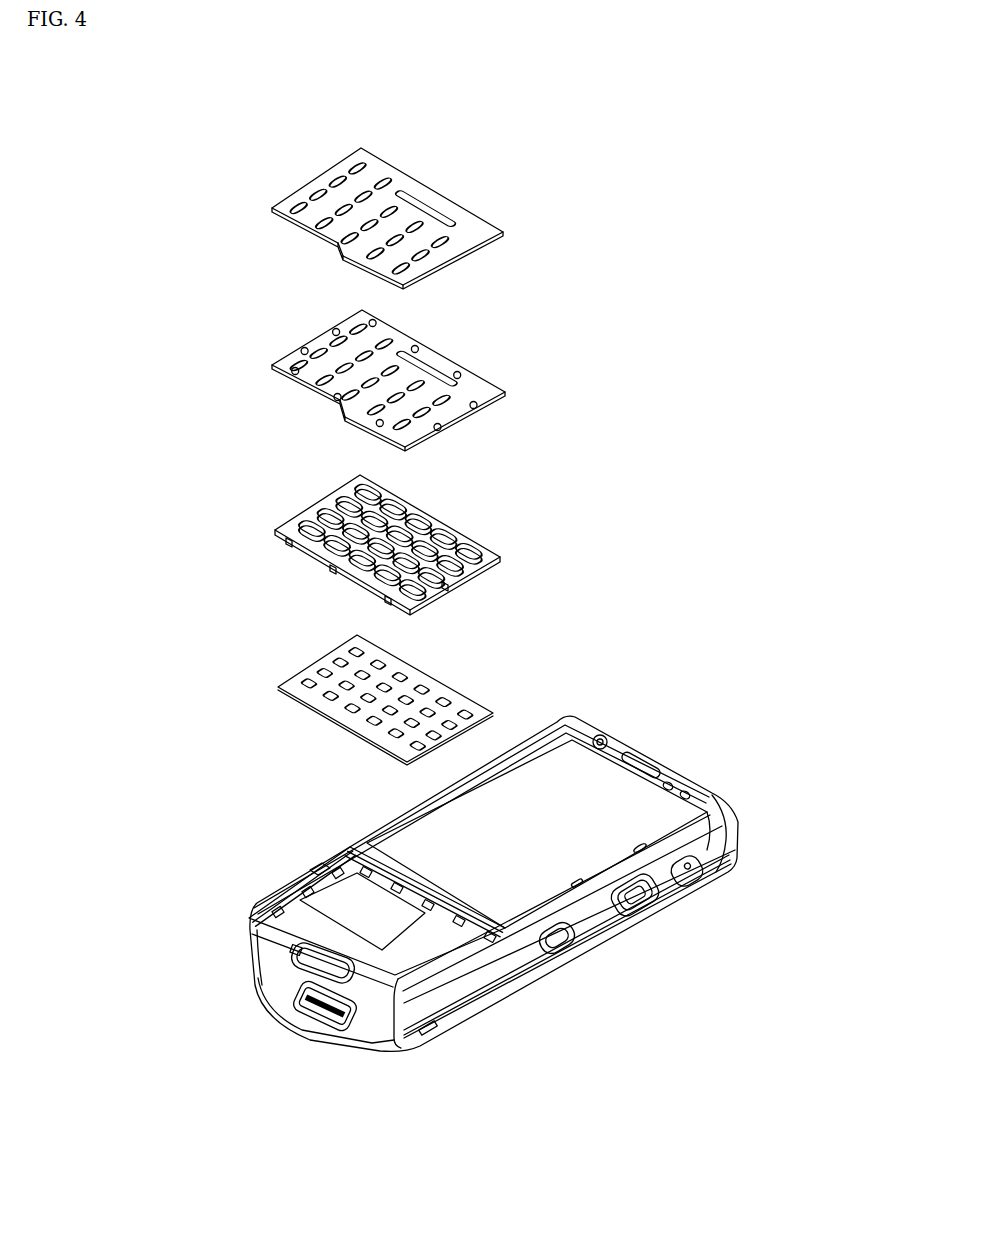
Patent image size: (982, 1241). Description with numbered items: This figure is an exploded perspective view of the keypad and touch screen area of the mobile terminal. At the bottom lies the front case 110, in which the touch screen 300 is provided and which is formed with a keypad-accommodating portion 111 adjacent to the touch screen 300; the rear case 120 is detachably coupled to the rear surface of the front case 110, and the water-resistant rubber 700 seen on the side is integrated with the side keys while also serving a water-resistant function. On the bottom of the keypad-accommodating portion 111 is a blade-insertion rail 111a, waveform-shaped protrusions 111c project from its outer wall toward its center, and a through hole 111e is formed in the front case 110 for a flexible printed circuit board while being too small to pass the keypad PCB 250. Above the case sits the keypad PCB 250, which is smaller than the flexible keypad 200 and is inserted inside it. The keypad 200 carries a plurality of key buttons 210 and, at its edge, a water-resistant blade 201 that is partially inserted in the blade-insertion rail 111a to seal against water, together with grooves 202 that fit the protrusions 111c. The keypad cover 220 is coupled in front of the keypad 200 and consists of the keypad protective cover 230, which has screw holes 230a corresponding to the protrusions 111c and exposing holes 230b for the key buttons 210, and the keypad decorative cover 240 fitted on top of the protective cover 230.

The front case 110 is at (670, 778).
The keypad-accommodating portion 111 is at (448, 941).
The blade-insertion rail 111a is at (422, 876).
The protrusion 111c is at (318, 858).
The through hole 111e is at (372, 931).
The rear case 120 is at (598, 936).
The flexible keypad 200 is at (492, 537).
The water-resistant blade 201 is at (500, 567).
The groove 202 is at (290, 543).
The key buttons 210 is at (308, 503).
The keypad cover 220 is at (174, 210).
The keypad protective cover 230 is at (272, 366).
The screw hole 230a is at (503, 232).
The exposing holes 230b is at (505, 394).
The keypad decorative cover 240 is at (272, 208).
The keypad PCB 250 is at (278, 697).
The touch screen 300 is at (588, 823).
The water-resistant rubber 700 is at (665, 899).